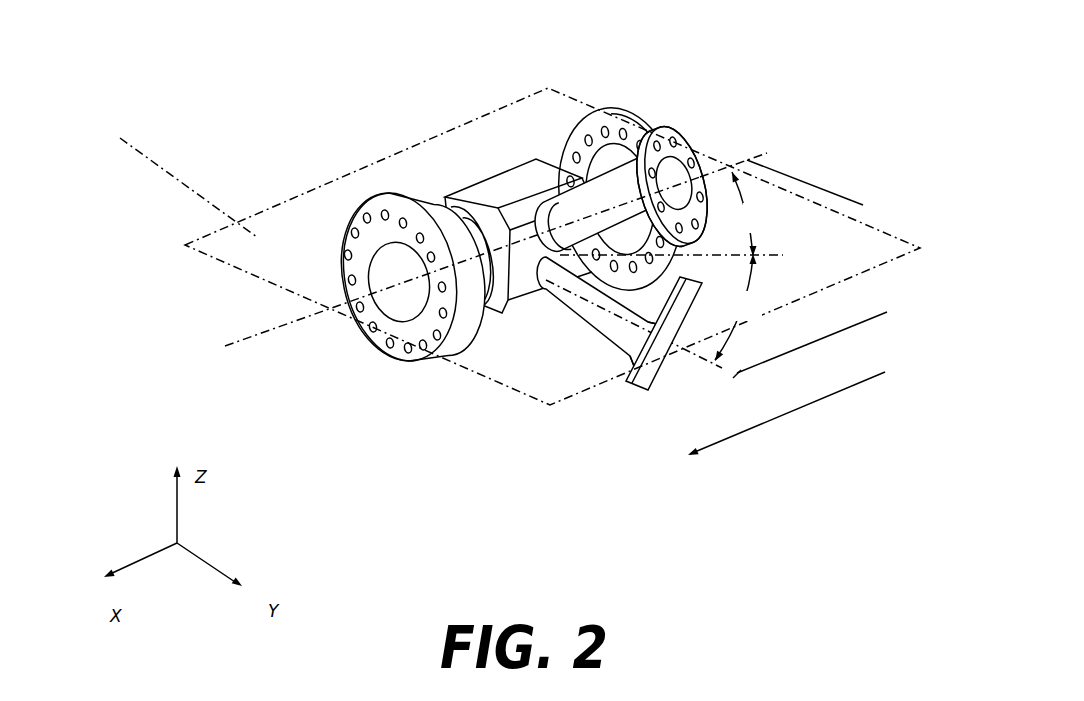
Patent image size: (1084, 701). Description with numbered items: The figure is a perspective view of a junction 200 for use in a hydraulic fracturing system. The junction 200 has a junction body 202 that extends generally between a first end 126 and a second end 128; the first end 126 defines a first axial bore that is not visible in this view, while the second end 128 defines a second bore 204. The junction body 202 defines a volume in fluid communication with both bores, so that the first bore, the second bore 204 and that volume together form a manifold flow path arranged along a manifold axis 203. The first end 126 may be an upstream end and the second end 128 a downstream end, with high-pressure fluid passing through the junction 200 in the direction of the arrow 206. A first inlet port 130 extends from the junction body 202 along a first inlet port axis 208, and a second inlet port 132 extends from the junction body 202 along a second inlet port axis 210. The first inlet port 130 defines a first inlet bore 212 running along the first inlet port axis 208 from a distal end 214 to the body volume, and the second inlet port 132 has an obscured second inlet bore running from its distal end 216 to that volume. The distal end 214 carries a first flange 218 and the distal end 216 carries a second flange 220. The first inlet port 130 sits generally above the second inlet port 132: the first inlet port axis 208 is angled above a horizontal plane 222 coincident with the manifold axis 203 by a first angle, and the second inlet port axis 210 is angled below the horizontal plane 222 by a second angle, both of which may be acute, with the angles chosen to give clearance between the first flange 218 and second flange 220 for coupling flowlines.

The junction 200 is at (501, 261).
The junction body 202 is at (492, 188).
The manifold axis 203 is at (258, 338).
The second bore 204 is at (410, 303).
The arrow 206 is at (786, 413).
The first inlet port axis 208 is at (863, 205).
The second inlet port axis 210 is at (887, 312).
The first inlet bore 212 is at (673, 177).
The distal end 214 is at (724, 151).
The distal end 216 is at (614, 403).
The first flange 218 is at (684, 163).
The second flange 220 is at (431, 325).
The horizontal plane 222 is at (116, 135).
The first end 126 is at (630, 80).
The second end 128 is at (255, 293).
The first inlet port 130 is at (680, 120).
The second inlet port 132 is at (575, 335).